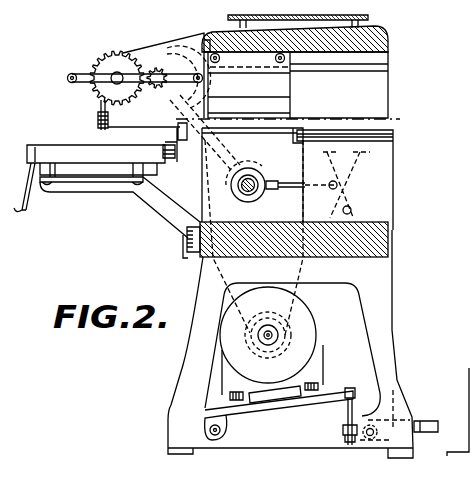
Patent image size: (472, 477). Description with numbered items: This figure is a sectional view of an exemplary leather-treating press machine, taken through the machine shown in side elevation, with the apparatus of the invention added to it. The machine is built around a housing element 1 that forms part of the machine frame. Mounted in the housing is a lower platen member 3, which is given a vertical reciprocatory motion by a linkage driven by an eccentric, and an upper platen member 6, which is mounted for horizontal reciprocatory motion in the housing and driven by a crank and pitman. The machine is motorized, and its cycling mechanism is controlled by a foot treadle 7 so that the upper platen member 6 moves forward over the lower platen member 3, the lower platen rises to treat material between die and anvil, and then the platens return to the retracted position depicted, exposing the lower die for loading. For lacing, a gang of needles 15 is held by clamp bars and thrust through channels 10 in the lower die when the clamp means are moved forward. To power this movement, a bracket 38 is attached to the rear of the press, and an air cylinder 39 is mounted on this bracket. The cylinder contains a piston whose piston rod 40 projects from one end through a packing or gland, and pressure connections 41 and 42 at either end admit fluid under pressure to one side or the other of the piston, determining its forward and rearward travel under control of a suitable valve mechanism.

The housing element 1 is at (384, 246).
The lower platen member 3 is at (396, 178).
The upper platen member 6 is at (249, 85).
The foot treadle 7 is at (428, 418).
The channels 10 is at (180, 117).
The needles 15 is at (50, 470).
The bracket 38 is at (137, 194).
The air cylinder 39 is at (66, 146).
The piston rod 40 is at (172, 145).
The pressure connection 41 is at (30, 205).
The pressure connection 42 is at (170, 240).